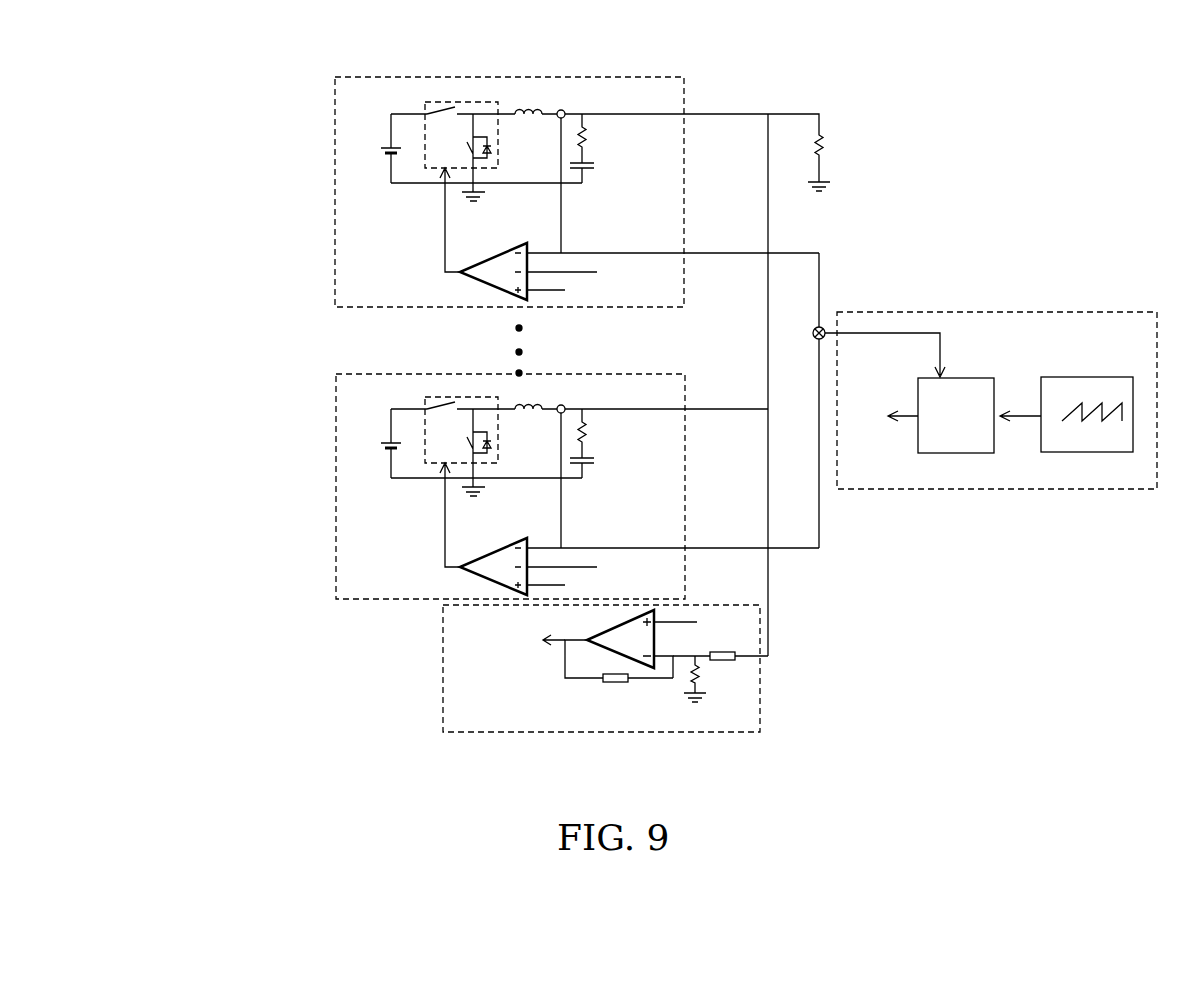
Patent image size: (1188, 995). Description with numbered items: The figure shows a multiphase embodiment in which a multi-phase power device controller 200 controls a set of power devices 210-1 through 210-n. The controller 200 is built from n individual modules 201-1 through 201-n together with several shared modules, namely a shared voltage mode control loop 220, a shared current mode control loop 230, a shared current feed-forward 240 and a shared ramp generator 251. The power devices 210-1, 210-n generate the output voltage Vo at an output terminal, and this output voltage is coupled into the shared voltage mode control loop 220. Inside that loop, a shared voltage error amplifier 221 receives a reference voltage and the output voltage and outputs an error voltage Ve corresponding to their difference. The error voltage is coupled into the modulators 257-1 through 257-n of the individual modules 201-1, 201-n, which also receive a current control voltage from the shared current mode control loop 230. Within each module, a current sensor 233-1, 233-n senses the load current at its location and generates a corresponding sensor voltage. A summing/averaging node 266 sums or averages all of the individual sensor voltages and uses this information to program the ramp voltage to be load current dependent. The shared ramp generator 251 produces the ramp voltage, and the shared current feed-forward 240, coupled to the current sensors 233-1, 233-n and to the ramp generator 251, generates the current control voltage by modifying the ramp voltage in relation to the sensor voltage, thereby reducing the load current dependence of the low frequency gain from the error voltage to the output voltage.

The multi-phase power device controller 200 is at (960, 103).
The individual module 201-1 is at (335, 137).
The individual module 201-n is at (335, 485).
The power device 210-1 is at (440, 91).
The power device 210-n is at (437, 397).
The current sensor 233-1 is at (564, 111).
The current sensor 233-n is at (565, 405).
The modulator 257-1 is at (482, 290).
The modulator 257-n is at (490, 583).
The summing/averaging node 266 is at (823, 328).
The shared current mode control loop 230 is at (1065, 308).
The shared current feed-forward 240 is at (980, 437).
The shared ramp generator 251 is at (1087, 380).
The shared voltage mode control loop 220 is at (442, 657).
The shared voltage error amplifier 221 is at (607, 653).